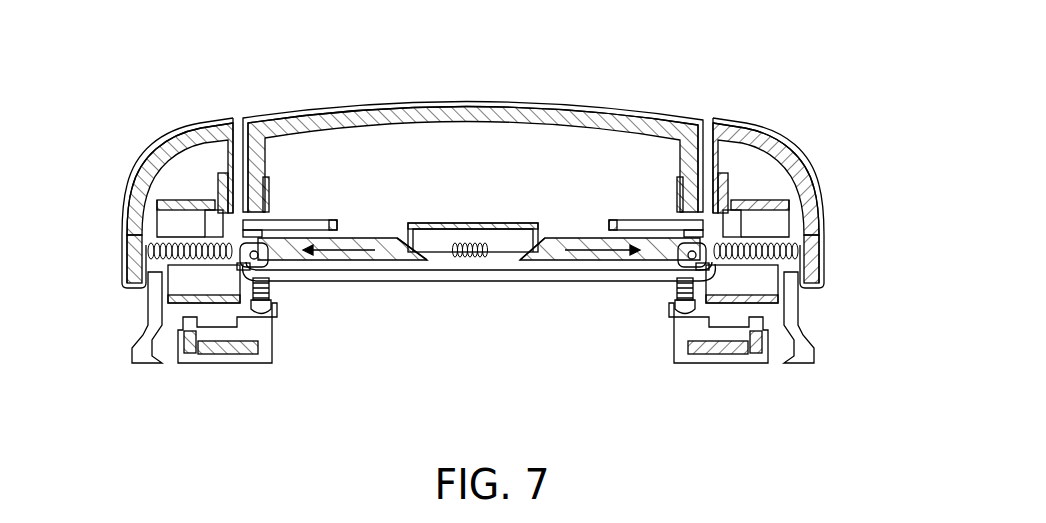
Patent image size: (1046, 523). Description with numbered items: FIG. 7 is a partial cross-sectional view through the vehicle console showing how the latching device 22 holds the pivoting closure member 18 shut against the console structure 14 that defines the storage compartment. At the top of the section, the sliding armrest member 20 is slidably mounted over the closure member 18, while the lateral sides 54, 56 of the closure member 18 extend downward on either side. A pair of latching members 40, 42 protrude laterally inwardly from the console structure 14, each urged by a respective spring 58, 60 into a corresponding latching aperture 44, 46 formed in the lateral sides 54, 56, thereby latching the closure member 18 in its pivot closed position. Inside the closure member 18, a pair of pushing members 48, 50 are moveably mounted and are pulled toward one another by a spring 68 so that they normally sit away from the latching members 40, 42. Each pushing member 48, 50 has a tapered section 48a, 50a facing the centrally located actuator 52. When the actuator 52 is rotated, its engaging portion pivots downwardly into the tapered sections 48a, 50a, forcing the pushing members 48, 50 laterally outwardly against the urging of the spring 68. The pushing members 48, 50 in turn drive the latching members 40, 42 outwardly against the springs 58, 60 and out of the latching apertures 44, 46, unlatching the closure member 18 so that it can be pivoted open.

The console structure 14 is at (121, 164).
The pivoting closure member 18 is at (470, 283).
The sliding armrest member 20 is at (491, 108).
The latching device 22 is at (568, 173).
The latching member 40 is at (263, 262).
The latching member 42 is at (688, 263).
The latching aperture 44 is at (300, 228).
The latching aperture 46 is at (697, 252).
The pushing member 48 is at (326, 262).
The tapered section 48a is at (428, 262).
The pushing member 50 is at (583, 262).
The tapered section 50a is at (517, 262).
The actuator 52 is at (495, 223).
The lateral side 54 is at (190, 232).
The lateral side 56 is at (727, 223).
The spring 58 is at (128, 262).
The spring 60 is at (824, 262).
The spring 68 is at (470, 242).